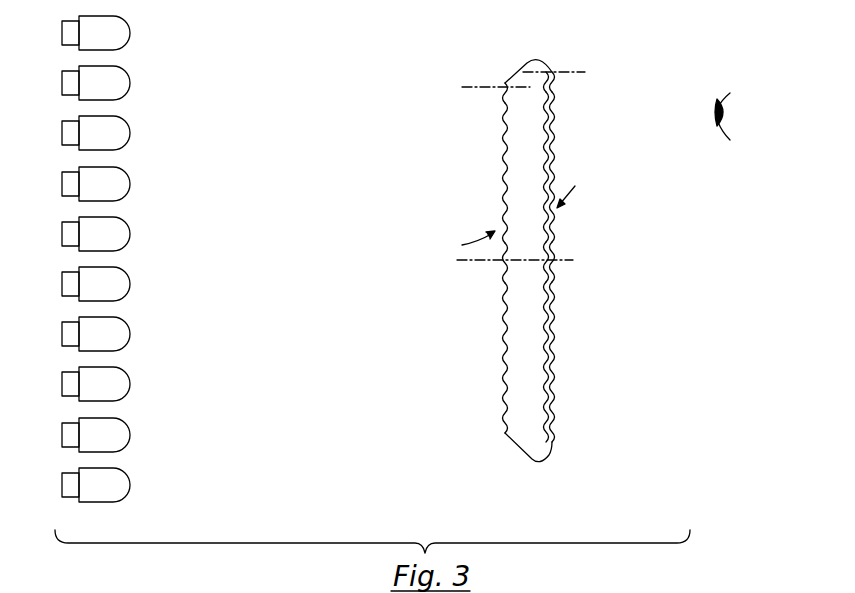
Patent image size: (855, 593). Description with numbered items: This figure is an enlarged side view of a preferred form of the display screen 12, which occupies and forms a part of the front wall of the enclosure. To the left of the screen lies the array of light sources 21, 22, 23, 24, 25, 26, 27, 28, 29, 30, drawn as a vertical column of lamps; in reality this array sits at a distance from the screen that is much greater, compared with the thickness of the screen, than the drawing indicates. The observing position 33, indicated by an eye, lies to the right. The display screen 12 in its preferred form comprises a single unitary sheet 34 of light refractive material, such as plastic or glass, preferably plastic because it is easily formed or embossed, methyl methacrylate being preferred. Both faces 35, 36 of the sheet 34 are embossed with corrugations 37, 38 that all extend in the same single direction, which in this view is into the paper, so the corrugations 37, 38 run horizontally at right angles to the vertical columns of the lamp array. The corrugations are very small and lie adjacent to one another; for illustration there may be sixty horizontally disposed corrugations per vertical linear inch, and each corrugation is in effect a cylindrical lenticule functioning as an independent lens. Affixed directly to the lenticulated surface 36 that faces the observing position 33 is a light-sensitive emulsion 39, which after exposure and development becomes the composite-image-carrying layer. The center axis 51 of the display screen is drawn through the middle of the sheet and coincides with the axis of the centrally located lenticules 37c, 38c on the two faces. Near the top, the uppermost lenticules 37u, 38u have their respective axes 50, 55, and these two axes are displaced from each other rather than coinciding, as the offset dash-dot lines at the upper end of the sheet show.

The display screen 12 is at (546, 38).
The light source 21 is at (128, 37).
The light source 22 is at (128, 87).
The light source 23 is at (128, 137).
The light source 24 is at (128, 188).
The light source 25 is at (128, 238).
The light source 26 is at (128, 288).
The light source 27 is at (128, 338).
The light source 28 is at (128, 388).
The light source 29 is at (128, 439).
The light source 30 is at (128, 489).
The observing position 33 is at (715, 112).
The single unitary sheet 34 is at (525, 64).
The face 35 is at (466, 244).
The face 36 is at (580, 190).
The corrugations 37 is at (505, 109).
The uppermost lenticule 37u is at (506, 79).
The centrally located lenticule 37c is at (505, 265).
The corrugations 38 is at (553, 111).
The uppermost lenticule 38u is at (551, 73).
The centrally located lenticule 38c is at (549, 261).
The light-sensitive emulsion 39 is at (553, 293).
The axis 50 is at (470, 88).
The center axis 51 is at (474, 262).
The axis 55 is at (567, 73).